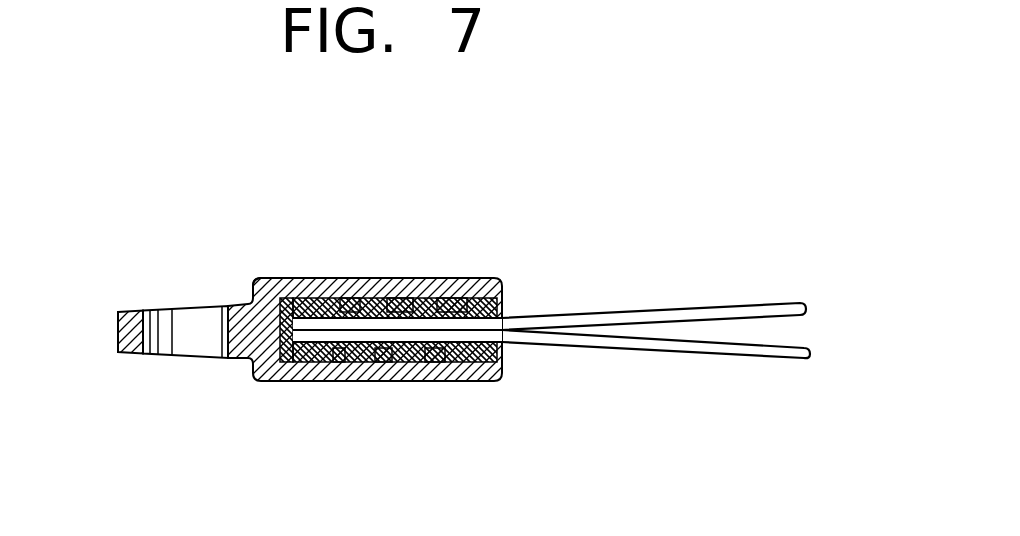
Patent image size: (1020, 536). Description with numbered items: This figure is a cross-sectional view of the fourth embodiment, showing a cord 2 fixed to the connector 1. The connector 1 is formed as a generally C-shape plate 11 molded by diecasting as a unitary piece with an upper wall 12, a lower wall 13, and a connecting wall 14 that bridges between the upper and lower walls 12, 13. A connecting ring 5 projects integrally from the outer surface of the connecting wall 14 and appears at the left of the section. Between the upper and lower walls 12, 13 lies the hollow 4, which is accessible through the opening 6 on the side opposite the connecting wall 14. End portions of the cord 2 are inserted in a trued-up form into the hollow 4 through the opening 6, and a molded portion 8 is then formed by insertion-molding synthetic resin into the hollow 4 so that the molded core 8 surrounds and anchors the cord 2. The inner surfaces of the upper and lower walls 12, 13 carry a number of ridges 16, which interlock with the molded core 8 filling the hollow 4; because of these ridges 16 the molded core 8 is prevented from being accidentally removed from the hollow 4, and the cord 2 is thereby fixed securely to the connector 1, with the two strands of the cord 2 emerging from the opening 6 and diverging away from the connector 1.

The connector 1 is at (268, 262).
The cord 2 is at (622, 312).
The hollow 4 is at (460, 278).
The connecting ring 5 is at (158, 356).
The opening 6 is at (510, 343).
The molded portion 8 is at (402, 278).
The C-shape plate 11 is at (283, 384).
The upper wall 12 is at (322, 278).
The lower wall 13 is at (430, 382).
The connecting wall 14 is at (252, 294).
The ridges 16 is at (371, 382).